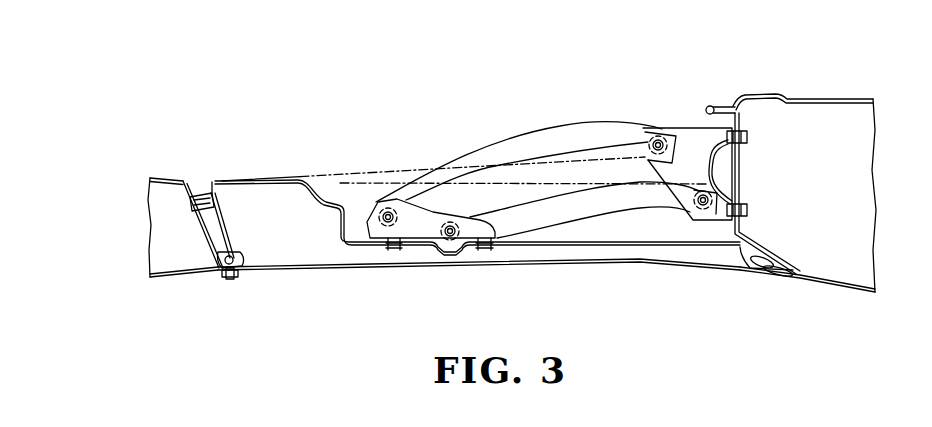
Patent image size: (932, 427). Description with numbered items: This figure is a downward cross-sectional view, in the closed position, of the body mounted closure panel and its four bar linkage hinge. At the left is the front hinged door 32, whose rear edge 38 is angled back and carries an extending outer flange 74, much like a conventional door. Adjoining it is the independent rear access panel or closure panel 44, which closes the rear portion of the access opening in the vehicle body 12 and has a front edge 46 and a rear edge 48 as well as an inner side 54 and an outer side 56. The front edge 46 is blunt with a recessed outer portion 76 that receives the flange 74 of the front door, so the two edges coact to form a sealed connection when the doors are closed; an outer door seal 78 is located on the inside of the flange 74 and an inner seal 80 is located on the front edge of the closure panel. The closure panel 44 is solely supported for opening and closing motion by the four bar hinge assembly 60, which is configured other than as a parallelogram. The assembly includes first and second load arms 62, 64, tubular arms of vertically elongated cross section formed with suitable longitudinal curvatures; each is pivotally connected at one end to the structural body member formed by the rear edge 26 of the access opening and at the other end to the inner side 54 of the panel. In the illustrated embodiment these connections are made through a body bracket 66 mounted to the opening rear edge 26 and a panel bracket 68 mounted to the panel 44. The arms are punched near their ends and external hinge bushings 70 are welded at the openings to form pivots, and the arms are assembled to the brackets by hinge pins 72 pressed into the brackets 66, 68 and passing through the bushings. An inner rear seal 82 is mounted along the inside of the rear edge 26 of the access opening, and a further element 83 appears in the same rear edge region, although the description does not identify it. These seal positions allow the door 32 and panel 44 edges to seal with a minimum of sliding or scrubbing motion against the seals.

The body 12 is at (857, 291).
The rear edge of the access opening 26 is at (794, 278).
The front hinged door 32 is at (160, 283).
The rear edge of the door 38 is at (210, 237).
The closure panel 44 is at (365, 271).
The front edge of the closure panel 46 is at (205, 222).
The rear edge of the closure panel 48 is at (789, 278).
The inner side of the closure panel 54 is at (332, 202).
The outer side of the closure panel 56 is at (534, 268).
The four bar hinge assembly 60 is at (660, 131).
The first load arm 62 is at (506, 128).
The second load arm 64 is at (622, 212).
The body bracket 66 is at (688, 133).
The panel bracket 68 is at (418, 234).
The external hinge bushings 70 is at (390, 205).
The hinge pins 72 is at (647, 143).
The outer flange 74 is at (231, 276).
The recessed outer portion 76 is at (235, 278).
The outer door seal 78 is at (236, 255).
The inner seal 80 is at (198, 192).
The inner rear seal 82 is at (718, 108).
The clip 83 is at (772, 258).